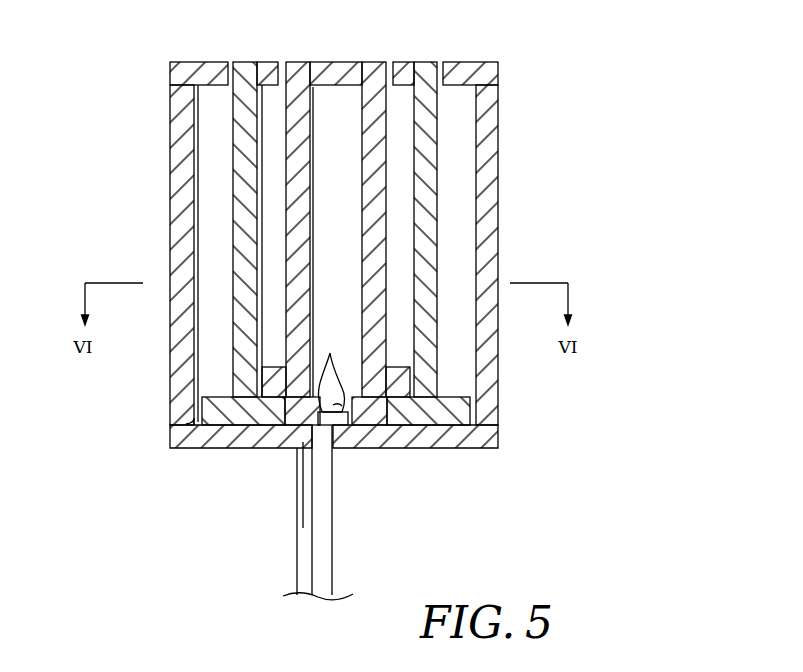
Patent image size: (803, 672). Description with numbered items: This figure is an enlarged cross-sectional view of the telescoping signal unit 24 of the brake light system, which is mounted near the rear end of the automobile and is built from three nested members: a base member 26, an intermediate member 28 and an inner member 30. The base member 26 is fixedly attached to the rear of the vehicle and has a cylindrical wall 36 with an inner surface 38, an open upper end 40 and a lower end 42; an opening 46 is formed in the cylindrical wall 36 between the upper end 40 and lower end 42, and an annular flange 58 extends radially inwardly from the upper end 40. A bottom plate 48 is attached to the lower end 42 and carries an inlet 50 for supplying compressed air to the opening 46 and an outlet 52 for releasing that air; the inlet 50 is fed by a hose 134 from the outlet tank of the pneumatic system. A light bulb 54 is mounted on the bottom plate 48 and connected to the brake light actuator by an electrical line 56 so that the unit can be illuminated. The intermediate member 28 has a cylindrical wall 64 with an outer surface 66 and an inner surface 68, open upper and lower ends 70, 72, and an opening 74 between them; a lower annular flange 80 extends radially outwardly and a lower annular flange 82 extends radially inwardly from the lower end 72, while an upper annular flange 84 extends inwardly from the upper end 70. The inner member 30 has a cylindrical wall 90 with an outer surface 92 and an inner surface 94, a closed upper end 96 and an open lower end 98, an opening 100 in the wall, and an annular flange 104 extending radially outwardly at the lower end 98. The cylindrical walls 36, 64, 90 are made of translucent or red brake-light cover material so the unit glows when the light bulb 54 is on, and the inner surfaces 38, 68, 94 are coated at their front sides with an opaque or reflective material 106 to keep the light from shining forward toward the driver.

The telescoping signal unit 24 is at (542, 42).
The base member 26 is at (514, 157).
The intermediate member 28 is at (447, 250).
The inner member 30 is at (388, 342).
The cylindrical wall 36 is at (186, 158).
The inner surface 38 is at (206, 178).
The upper end 40 is at (168, 77).
The lower end 42 is at (502, 438).
The opening 46 is at (222, 213).
The bottom plate 48 is at (272, 433).
The inlet 50 is at (303, 528).
The outlet 52 is at (365, 440).
The light bulb 54 is at (348, 426).
The electrical line 56 is at (333, 548).
The annular flange 58 is at (213, 70).
The cylindrical wall 64 is at (268, 357).
The outer surface 66 is at (258, 362).
The inner surface 68 is at (270, 386).
The upper end 70 is at (428, 61).
The lower end 72 is at (438, 382).
The opening 74 is at (272, 262).
The lower annular flange 80 is at (190, 420).
The lower annular flange 82 is at (213, 437).
The upper annular flange 84 is at (256, 64).
The cylindrical wall 90 is at (372, 150).
The outer surface 92 is at (390, 165).
The inner surface 94 is at (362, 206).
The upper end 96 is at (347, 62).
The lower end 98 is at (388, 357).
The opening 100 is at (340, 272).
The annular flange 104 is at (387, 390).
The coating material 106 is at (312, 118).
The hose 134 is at (296, 568).